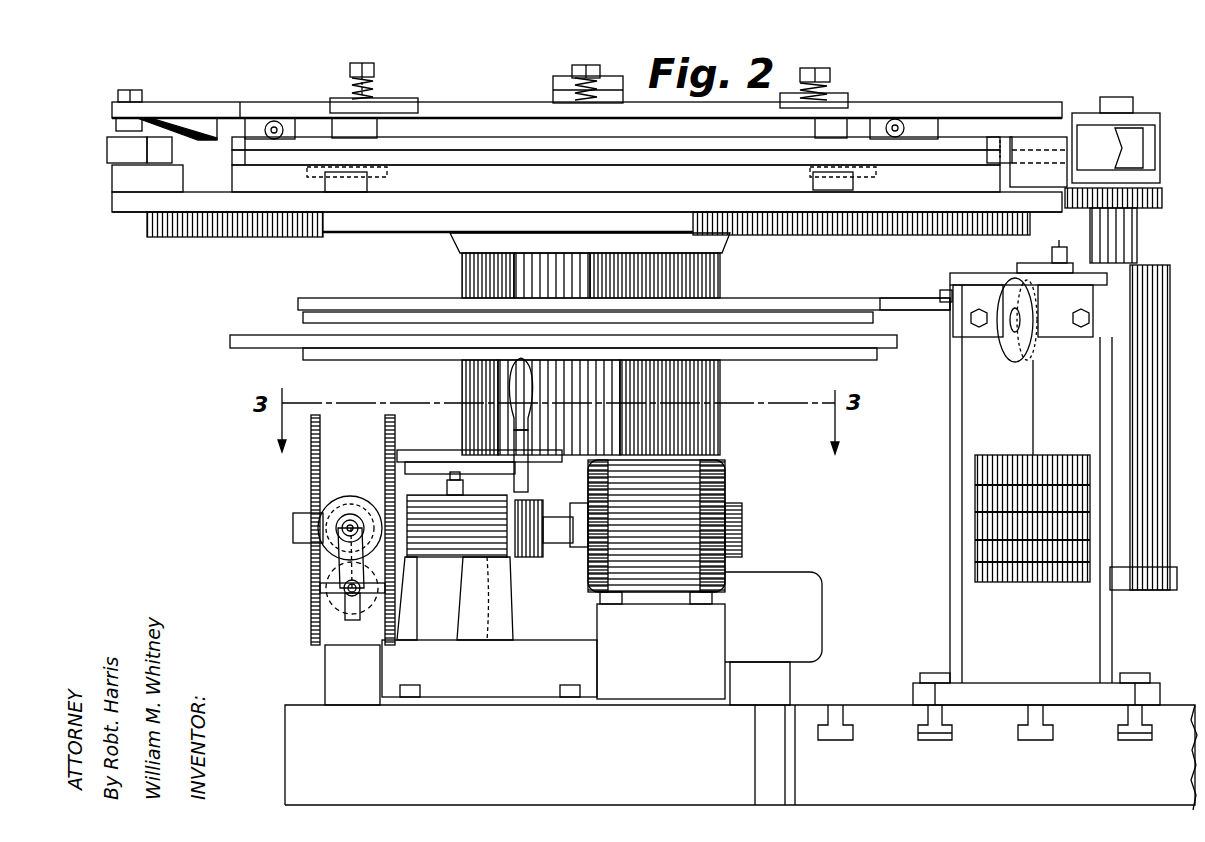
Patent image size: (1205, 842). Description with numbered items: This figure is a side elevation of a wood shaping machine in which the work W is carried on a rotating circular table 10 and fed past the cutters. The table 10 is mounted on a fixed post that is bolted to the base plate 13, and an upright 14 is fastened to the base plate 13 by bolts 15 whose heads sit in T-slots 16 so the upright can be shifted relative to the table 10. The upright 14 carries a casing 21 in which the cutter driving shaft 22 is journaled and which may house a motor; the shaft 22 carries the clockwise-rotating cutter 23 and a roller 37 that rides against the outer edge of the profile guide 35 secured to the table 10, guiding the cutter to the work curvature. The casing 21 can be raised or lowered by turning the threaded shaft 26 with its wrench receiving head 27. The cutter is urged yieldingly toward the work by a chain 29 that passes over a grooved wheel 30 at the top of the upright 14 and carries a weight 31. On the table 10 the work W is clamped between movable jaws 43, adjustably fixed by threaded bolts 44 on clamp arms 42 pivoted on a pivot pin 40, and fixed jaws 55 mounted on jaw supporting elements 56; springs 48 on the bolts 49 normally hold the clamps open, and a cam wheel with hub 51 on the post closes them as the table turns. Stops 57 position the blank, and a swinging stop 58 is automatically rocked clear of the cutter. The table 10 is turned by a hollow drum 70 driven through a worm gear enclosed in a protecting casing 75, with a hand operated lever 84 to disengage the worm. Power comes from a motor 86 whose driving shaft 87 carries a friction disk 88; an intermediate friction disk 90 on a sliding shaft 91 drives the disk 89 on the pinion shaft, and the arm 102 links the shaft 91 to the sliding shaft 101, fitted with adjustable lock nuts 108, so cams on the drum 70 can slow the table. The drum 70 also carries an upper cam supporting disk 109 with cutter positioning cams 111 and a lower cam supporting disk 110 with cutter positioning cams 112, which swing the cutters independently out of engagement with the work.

The work supporting table 10 is at (928, 217).
The base plate 13 is at (882, 727).
The upright 14 is at (971, 419).
The bolts 15 is at (933, 670).
The T-slots 16 is at (838, 727).
The casing 21 is at (1130, 403).
The cutter driving shaft 22 is at (1110, 200).
The cutter 23 is at (1133, 140).
The threaded shaft 26 is at (1053, 263).
The wrench receiving head 27 is at (1058, 255).
The chain 29 is at (1035, 357).
The grooved wheel 30 is at (1015, 340).
The weight 31 is at (1092, 513).
The profile guide 35 is at (140, 207).
The roller 37 is at (1120, 220).
The pivot pin 40 is at (270, 120).
The arms 42 is at (500, 107).
The work-engaging jaws 43 is at (330, 130).
The threaded bolts 44 is at (130, 90).
The springs 48 is at (376, 88).
The bolts 49 is at (372, 68).
The hub 51 is at (553, 78).
The fixed jaws 55 is at (340, 183).
The jaw supporting elements 56 is at (113, 181).
The stops 57 is at (1053, 150).
The swinging stop 58 is at (997, 140).
The hollow drum 70 is at (717, 290).
The protecting casing 75 is at (810, 617).
The hand operated lever 84 is at (532, 383).
The motor 86 is at (717, 465).
The driving shaft 87 is at (558, 513).
The friction disk 88 is at (385, 437).
The friction disk 89 is at (320, 432).
The intermediate friction disk 90 is at (345, 497).
The shaft 91 is at (343, 528).
The sliding shaft 101 is at (362, 605).
The arm 102 is at (350, 547).
The adjustable lock nuts 108 is at (348, 610).
The upper cam supporting disk 109 is at (350, 308).
The lower cam supporting disk 110 is at (345, 360).
The cutter positioning cams 111 is at (907, 300).
The cutter positioning cams 112 is at (270, 340).
The work W is at (108, 165).